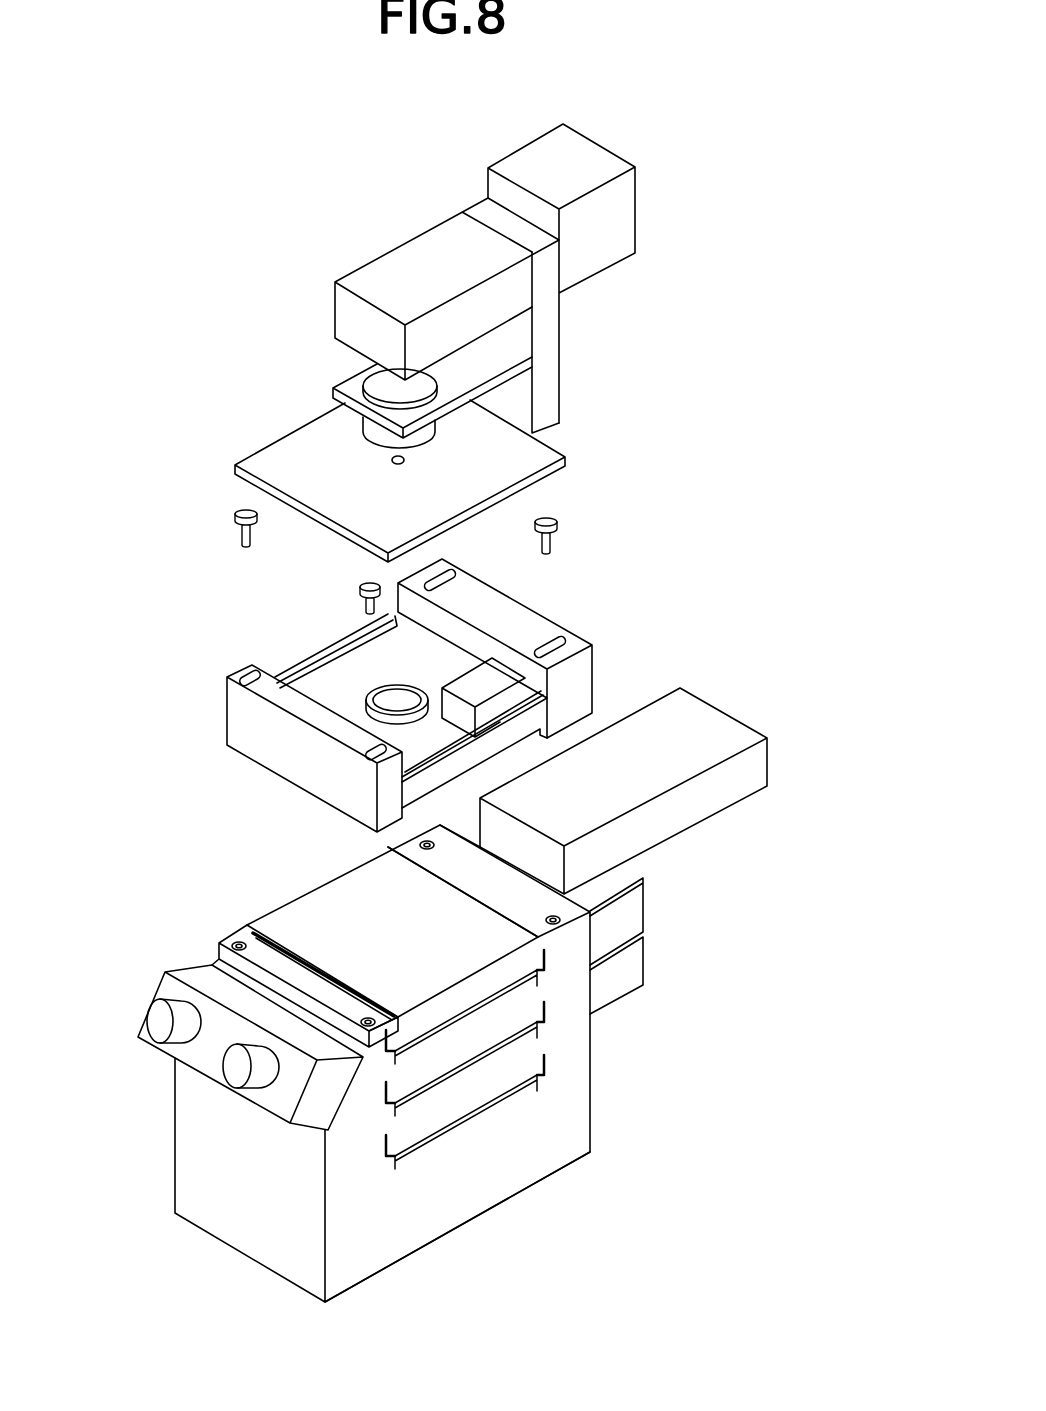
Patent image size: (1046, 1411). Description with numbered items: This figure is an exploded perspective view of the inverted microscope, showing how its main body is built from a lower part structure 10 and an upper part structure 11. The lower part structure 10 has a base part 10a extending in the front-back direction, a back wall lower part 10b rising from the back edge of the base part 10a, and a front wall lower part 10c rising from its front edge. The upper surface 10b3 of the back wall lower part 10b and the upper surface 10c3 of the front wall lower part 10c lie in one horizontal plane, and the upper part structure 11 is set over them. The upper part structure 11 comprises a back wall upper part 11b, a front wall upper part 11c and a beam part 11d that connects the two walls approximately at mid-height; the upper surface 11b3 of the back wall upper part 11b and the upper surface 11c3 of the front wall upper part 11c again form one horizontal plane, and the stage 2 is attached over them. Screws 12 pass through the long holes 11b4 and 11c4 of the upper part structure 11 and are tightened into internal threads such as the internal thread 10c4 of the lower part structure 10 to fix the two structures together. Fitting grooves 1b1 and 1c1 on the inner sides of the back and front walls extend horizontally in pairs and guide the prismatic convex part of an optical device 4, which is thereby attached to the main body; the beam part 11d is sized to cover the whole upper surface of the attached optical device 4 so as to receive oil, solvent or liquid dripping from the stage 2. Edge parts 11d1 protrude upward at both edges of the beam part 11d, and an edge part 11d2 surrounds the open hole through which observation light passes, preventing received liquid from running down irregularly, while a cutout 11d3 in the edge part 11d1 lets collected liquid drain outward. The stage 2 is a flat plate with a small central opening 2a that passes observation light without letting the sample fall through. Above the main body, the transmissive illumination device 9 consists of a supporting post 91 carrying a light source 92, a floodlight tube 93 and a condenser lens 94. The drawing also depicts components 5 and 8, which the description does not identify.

The stage 2 is at (400, 467).
The opening 2a is at (398, 466).
The optical device 4 is at (568, 1059).
The block 5 is at (760, 777).
The connector block 8 is at (270, 1102).
The transmissive illumination device 9 is at (478, 259).
The supporting post 91 is at (550, 327).
The light source 92 is at (528, 155).
The floodlight tube 93 is at (390, 265).
The condenser lens 94 is at (362, 370).
The lower part structure 10 is at (409, 1043).
The base part 10a is at (455, 1217).
The back wall lower part 10b is at (572, 891).
The upper surface of back wall lower part 10b3 is at (518, 848).
The front wall lower part 10c is at (299, 1052).
The upper surface of front wall lower part 10c3 is at (238, 942).
The internal thread 10c4 is at (258, 938).
The upper part structure 11 is at (413, 729).
The back wall upper part 11b is at (557, 730).
The upper surface of back wall upper part 11b3 is at (627, 648).
The long hole 11b4 is at (558, 640).
The front wall upper part 11c is at (255, 753).
The upper surface of front wall upper part 11c3 is at (310, 715).
The long hole 11c4 is at (243, 668).
The beam part 11d is at (416, 679).
The edge part 11d1 is at (450, 742).
The edge part 11d2 is at (403, 683).
The cutout 11d3 is at (383, 685).
The screw 12 is at (234, 518).
The fitting groove 1b1 is at (547, 1060).
The fitting groove 1c1 is at (390, 1037).